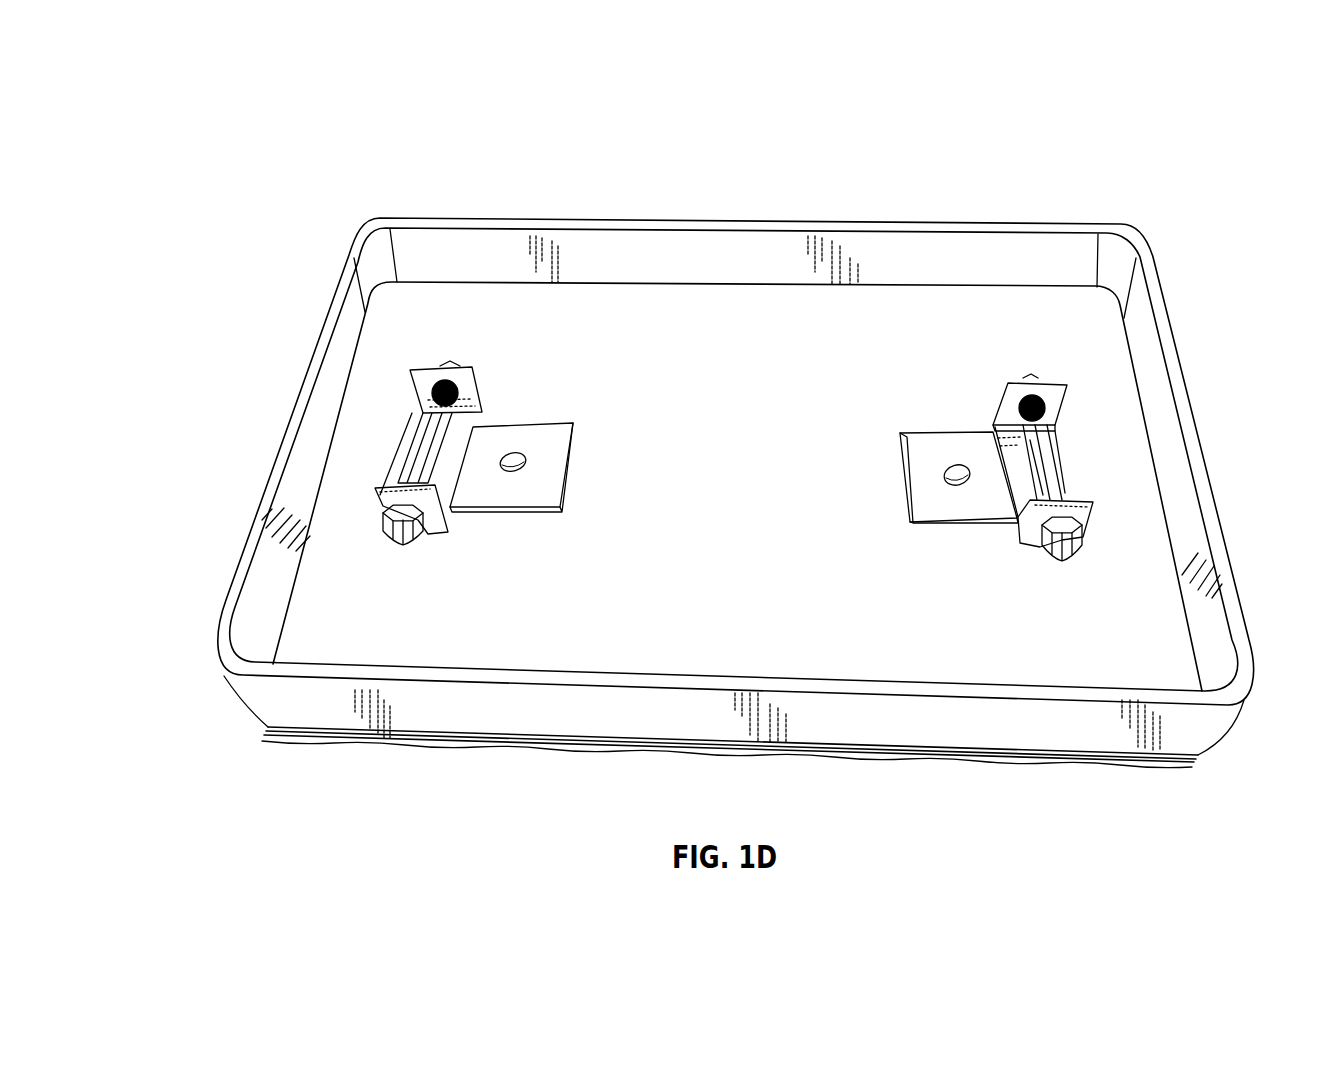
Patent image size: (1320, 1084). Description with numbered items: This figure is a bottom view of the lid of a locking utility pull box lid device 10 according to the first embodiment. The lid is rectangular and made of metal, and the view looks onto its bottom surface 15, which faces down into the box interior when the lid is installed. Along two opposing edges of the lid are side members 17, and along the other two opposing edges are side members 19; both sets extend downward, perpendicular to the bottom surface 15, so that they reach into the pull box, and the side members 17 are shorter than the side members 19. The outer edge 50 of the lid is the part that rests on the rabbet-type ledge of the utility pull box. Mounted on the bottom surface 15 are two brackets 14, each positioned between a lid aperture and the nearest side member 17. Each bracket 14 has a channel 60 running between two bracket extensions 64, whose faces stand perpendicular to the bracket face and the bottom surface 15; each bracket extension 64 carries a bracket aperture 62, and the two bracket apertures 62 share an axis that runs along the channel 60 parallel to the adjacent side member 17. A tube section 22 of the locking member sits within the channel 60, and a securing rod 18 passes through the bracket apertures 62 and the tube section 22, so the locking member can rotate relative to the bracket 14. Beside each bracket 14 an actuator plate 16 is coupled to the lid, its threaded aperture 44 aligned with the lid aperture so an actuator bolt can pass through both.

The locking utility pull box lid device 10 is at (226, 155).
The bracket 14 is at (1149, 433).
The bottom surface 15 is at (746, 485).
The actuator plate 16 is at (930, 453).
The side member 17 is at (290, 540).
The securing rod 18 is at (407, 550).
The side member 19 is at (758, 265).
The tube section 22 is at (407, 466).
The threaded aperture 44 is at (953, 467).
The edge 50 is at (307, 670).
The channel 60 is at (1062, 457).
The bracket aperture 62 is at (1062, 403).
The bracket extension 64 is at (433, 523).